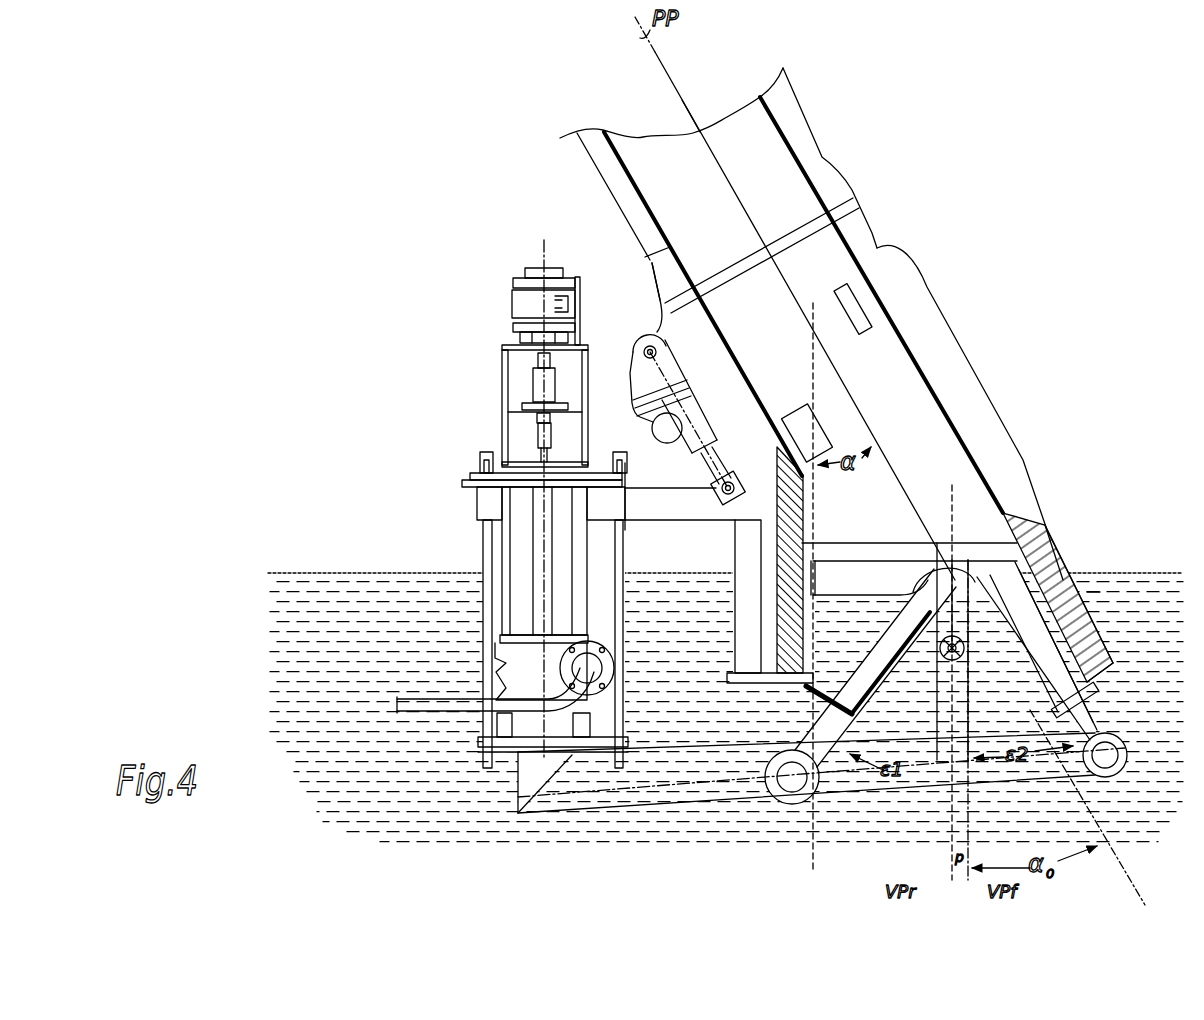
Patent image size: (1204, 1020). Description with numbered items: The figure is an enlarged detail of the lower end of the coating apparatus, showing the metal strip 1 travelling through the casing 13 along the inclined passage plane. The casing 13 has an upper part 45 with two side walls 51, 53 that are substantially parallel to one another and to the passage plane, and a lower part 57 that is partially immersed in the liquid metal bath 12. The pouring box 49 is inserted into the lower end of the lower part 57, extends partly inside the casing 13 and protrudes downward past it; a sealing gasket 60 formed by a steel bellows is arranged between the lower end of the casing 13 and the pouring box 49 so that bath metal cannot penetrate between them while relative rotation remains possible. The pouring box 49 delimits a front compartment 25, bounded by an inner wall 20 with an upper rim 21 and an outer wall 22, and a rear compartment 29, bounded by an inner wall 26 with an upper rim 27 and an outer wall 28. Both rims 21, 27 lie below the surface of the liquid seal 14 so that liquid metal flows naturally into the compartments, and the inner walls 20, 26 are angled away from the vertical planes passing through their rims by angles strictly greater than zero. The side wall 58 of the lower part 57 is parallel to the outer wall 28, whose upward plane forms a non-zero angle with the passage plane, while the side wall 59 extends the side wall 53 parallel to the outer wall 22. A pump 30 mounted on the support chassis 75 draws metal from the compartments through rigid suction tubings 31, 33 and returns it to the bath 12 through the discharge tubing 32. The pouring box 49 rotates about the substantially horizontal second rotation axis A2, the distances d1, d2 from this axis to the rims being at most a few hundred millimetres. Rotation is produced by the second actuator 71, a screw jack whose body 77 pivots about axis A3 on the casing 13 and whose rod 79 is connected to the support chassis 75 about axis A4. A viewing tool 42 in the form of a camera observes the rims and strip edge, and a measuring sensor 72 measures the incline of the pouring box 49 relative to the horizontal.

The metal strip 1 is at (683, 100).
The liquid metal bath 12 is at (725, 707).
The casing 13 is at (574, 174).
The liquid seal 14 is at (946, 584).
The inner wall 20 is at (1048, 588).
The upper rim 21 is at (961, 572).
The outer wall 22 is at (1082, 618).
The front compartment 25 is at (997, 574).
The inner wall 26 is at (880, 673).
The upper rim 27 is at (911, 568).
The outer wall 28 is at (776, 628).
The rear compartment 29 is at (848, 576).
The pump 30 is at (469, 397).
The suction tubing 31 is at (986, 792).
The discharge tubing 32 is at (398, 697).
The suction tubing 33 is at (718, 780).
The viewing tool 42 is at (838, 292).
The upper part 45 is at (908, 318).
The pouring box 49 is at (1064, 580).
The side wall 51 is at (738, 336).
The side wall 53 is at (930, 380).
The lower part 57 is at (1092, 592).
The side wall 58 is at (726, 661).
The side wall 59 is at (1100, 648).
The sealing gasket 60 is at (1112, 688).
The second actuator 71 is at (688, 397).
The measuring sensor 72 is at (820, 432).
The support chassis 75 is at (734, 606).
The body 77 is at (690, 392).
The rod 79 is at (729, 468).
The second rotation axis A2 is at (963, 655).
The rotation axis A3 is at (645, 352).
The rotation axis A4 is at (733, 500).
The distance d1 is at (946, 654).
The distance d2 is at (952, 636).